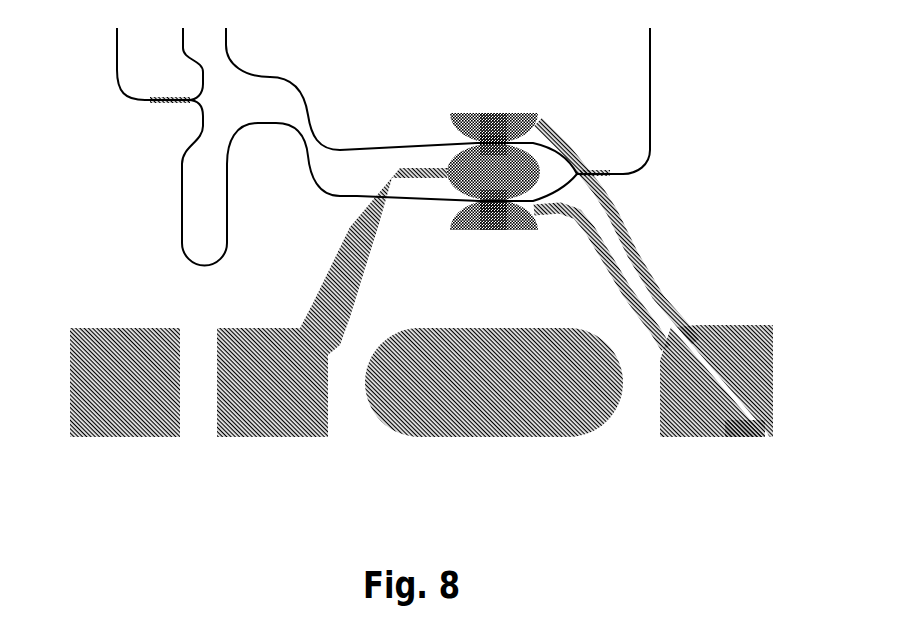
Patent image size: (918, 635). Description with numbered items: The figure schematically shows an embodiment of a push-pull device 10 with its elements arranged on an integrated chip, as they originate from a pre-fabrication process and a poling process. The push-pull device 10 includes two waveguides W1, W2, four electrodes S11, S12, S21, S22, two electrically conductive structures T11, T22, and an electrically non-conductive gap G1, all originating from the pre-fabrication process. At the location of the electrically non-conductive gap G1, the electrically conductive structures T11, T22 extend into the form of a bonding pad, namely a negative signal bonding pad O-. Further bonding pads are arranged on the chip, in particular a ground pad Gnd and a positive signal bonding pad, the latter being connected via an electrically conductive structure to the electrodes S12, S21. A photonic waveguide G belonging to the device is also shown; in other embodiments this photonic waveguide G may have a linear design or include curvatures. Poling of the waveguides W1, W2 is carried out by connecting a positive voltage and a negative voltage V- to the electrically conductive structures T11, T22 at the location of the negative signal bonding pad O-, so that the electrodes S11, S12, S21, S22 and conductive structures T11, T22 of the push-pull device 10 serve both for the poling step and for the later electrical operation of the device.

The push-pull device 10 is at (50, 158).
The photonic waveguide G is at (355, 195).
The electrode S22 is at (480, 115).
The waveguide W2 is at (498, 143).
The electrode S21 is at (498, 163).
The electrode S12 is at (500, 183).
The electrically conductive structure T22 is at (623, 227).
The waveguide W1 is at (500, 205).
The electrode S11 is at (512, 227).
The electrically conductive structure T11 is at (612, 282).
The electrically non-conductive gap G1 is at (720, 417).
The voltage V- is at (767, 398).
The negative signal bonding pad O- is at (733, 440).
The ground pad Gnd is at (346, 382).